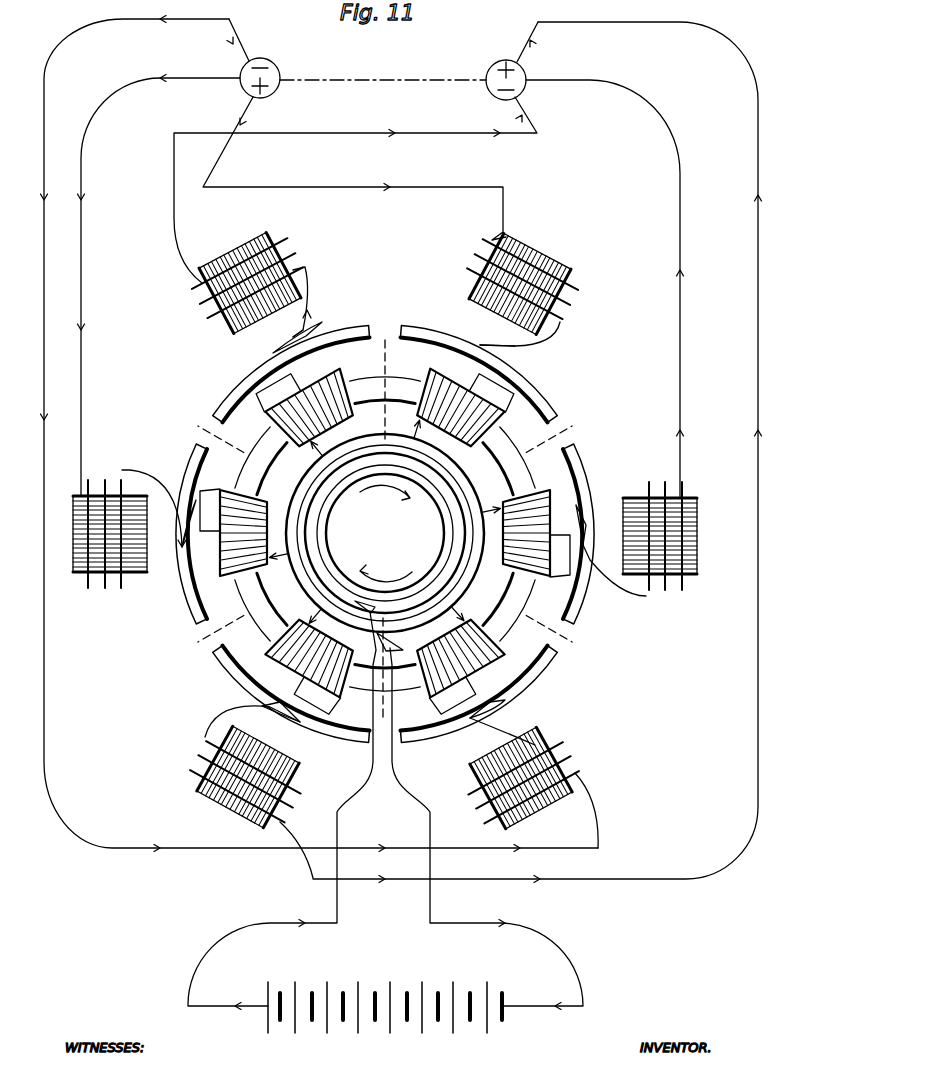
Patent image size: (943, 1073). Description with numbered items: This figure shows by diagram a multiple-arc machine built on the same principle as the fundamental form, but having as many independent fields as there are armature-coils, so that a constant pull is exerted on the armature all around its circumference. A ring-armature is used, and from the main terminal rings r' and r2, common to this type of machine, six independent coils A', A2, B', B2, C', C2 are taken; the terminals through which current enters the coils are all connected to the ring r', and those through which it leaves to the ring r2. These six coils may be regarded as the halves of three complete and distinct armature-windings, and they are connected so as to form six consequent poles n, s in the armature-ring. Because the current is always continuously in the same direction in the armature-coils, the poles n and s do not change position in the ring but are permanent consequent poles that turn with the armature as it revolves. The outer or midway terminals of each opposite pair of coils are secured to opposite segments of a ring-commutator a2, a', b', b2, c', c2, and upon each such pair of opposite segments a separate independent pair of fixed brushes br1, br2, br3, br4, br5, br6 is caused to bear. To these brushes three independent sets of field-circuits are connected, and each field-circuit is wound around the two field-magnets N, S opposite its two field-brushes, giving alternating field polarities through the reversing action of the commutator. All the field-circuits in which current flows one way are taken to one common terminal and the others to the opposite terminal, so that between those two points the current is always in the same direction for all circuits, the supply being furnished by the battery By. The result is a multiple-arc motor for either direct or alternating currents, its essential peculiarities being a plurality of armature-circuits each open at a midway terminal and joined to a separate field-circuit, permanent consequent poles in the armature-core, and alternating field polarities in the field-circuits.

The armature-coil A' is at (527, 533).
The armature-coil A2 is at (241, 532).
The armature-coil B' is at (460, 665).
The armature-coil B2 is at (308, 402).
The armature-coil C' is at (309, 665).
The armature-coil C2 is at (461, 402).
The main terminal ring r' is at (385, 533).
The main terminal ring r2 is at (385, 533).
The ring-commutator segment c2 is at (481, 366).
The ring-commutator segment b2 is at (288, 366).
The ring-commutator segment c' is at (288, 701).
The ring-commutator segment b' is at (481, 701).
The ring-commutator segment a2 is at (191, 534).
The ring-commutator segment a' is at (578, 534).
The battery By is at (378, 1007).
The field-brush br1 is at (162, 546).
The field-brush br2 is at (616, 534).
The field-brush br3 is at (501, 339).
The field-brush br4 is at (289, 741).
The field-brush br5 is at (309, 323).
The field-brush br6 is at (512, 731).
The field-magnet pole N is at (268, 332).
The field-magnet pole S is at (486, 325).
The consequent pole n is at (394, 485).
The consequent pole s is at (376, 587).